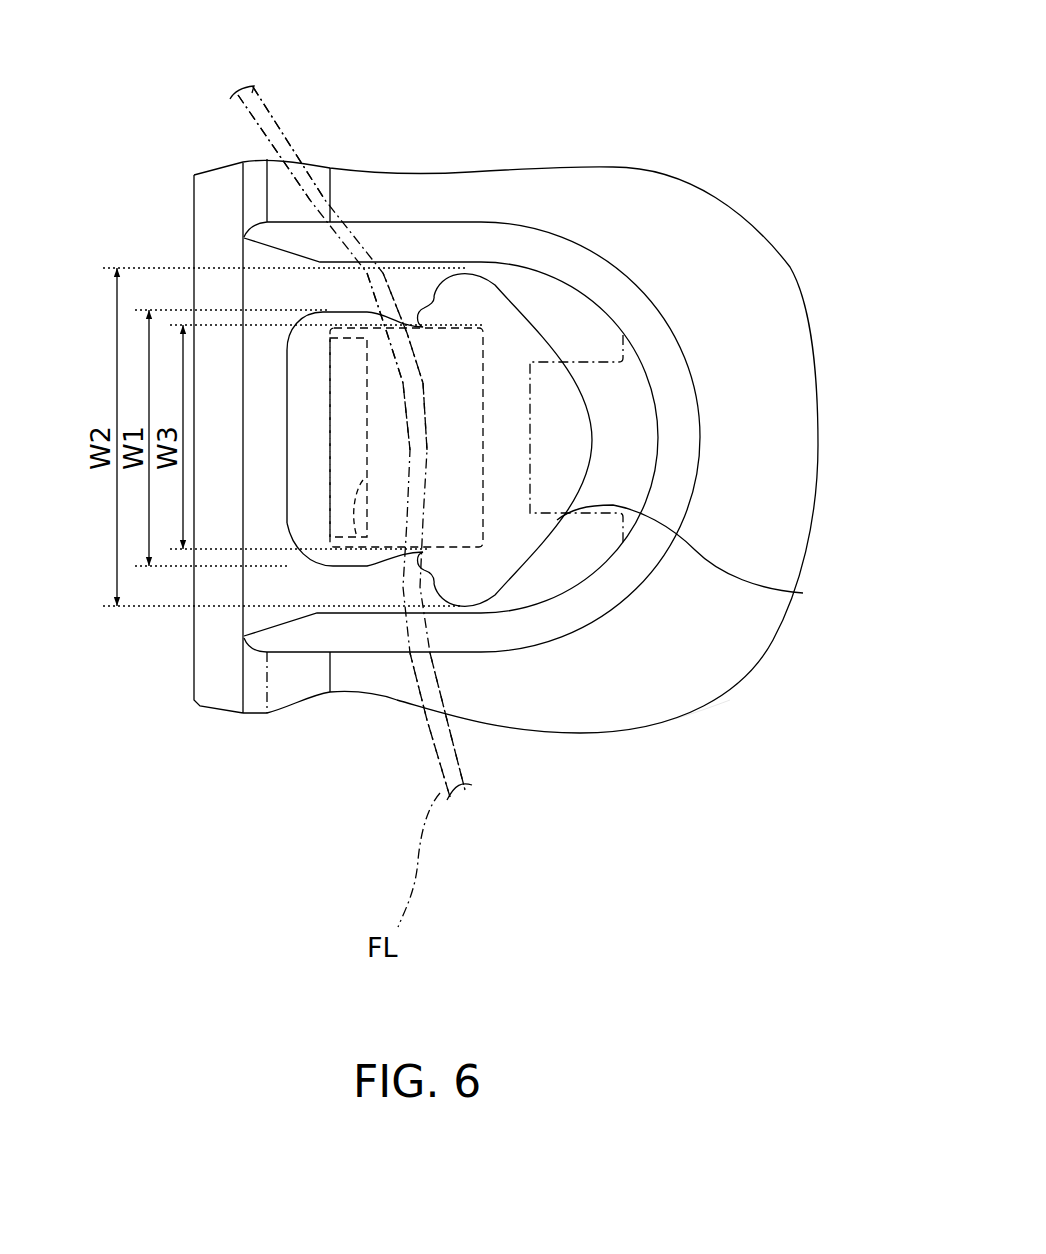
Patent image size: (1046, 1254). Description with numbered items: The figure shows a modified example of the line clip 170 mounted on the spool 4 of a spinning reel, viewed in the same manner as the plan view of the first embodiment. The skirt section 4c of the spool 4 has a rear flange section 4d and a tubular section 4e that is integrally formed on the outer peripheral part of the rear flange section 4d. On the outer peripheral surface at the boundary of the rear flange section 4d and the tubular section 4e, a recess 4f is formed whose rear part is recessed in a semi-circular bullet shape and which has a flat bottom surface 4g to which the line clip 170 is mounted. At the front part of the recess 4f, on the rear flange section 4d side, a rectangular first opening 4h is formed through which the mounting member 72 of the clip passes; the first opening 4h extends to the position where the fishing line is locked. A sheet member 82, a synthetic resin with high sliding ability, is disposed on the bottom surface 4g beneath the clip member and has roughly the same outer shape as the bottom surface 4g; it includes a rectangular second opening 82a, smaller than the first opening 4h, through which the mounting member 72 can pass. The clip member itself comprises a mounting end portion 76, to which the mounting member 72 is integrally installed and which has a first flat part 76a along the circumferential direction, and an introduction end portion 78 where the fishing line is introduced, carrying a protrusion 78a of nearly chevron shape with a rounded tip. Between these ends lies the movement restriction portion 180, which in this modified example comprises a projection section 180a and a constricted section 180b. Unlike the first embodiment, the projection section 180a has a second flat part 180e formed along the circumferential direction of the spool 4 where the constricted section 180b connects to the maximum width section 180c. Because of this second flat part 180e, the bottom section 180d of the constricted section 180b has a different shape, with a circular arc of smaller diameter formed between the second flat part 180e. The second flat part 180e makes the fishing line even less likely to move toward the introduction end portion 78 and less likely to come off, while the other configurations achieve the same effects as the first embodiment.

The spool 4 is at (177, 160).
The skirt section 4c is at (770, 680).
The rear flange section 4d is at (244, 237).
The tubular section 4e is at (739, 203).
The recess 4f is at (643, 387).
The bottom surface 4g is at (630, 457).
The first opening 4h is at (483, 473).
The mounting member 72 is at (349, 532).
The mounting end portion 76 is at (287, 483).
The first flat part 76a is at (280, 506).
The introduction end portion 78 is at (572, 371).
The protrusion 78a is at (583, 433).
The sheet member 82 is at (616, 567).
The second opening 82a is at (382, 553).
The line clip 170 is at (507, 320).
The movement restriction portion 180 is at (498, 80).
The projection section 180a is at (455, 264).
The constricted section 180b is at (405, 307).
The maximum width section 180c is at (521, 282).
The bottom section 180d is at (390, 550).
The second flat part 180e is at (447, 333).